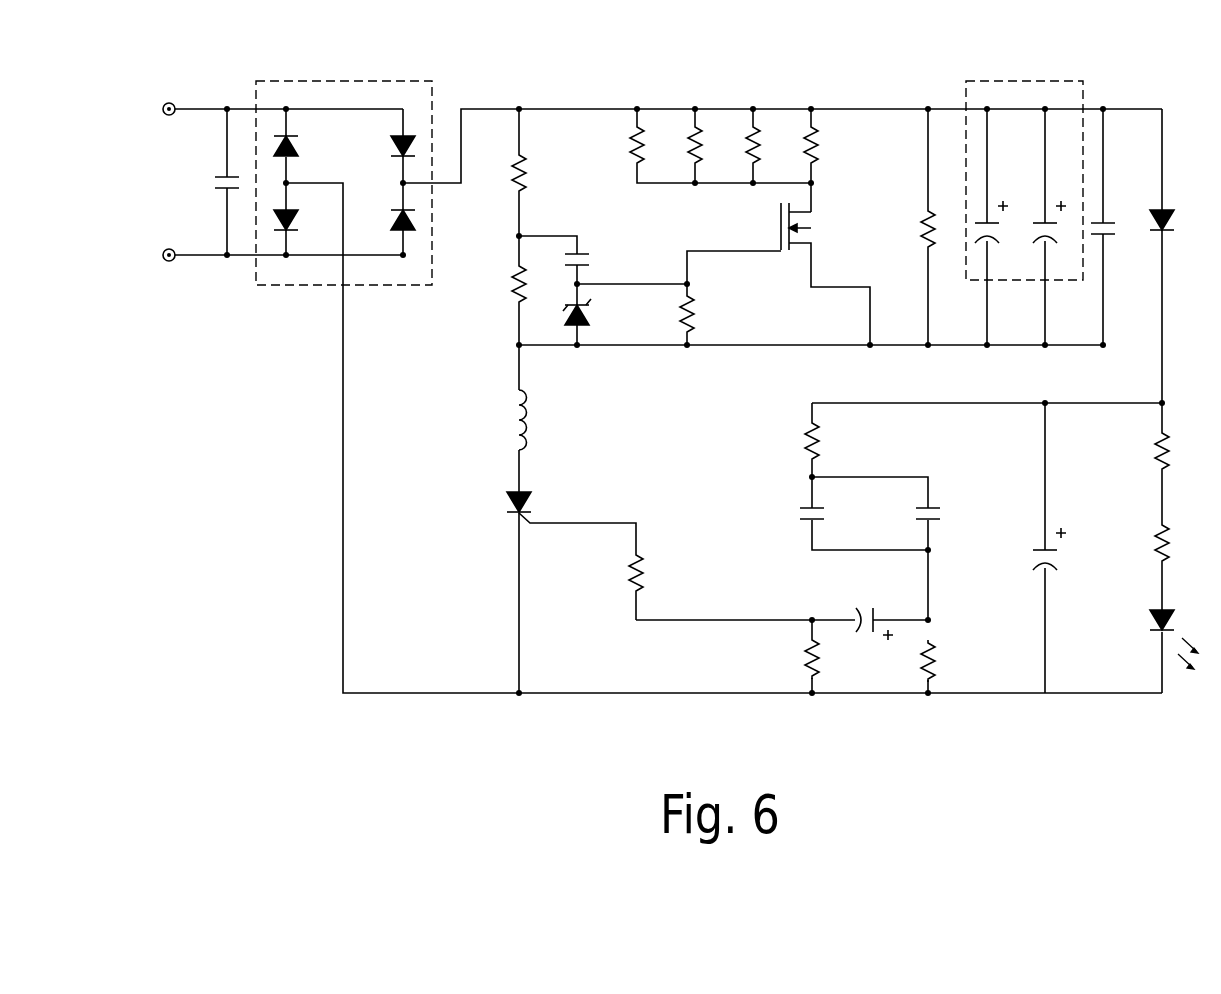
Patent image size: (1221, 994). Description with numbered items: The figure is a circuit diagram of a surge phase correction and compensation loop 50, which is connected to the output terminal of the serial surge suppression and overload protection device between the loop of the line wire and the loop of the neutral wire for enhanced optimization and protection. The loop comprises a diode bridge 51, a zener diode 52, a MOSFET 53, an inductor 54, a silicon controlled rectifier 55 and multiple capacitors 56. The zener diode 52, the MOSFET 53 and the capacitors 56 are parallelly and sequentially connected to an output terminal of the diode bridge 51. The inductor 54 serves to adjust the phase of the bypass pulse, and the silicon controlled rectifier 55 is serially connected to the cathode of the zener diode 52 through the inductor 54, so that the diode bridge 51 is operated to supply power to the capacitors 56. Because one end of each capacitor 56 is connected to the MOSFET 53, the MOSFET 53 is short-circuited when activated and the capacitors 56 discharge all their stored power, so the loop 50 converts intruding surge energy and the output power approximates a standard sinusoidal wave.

The surge phase correction and compensation loop 50 is at (260, 625).
The diode bridge 51 is at (342, 81).
The zener diode 52 is at (553, 325).
The MOSFET 53 is at (763, 227).
The inductor 54 is at (502, 425).
The silicon controlled rectifier (SCR) 55 is at (495, 508).
The capacitors 56 is at (1031, 81).